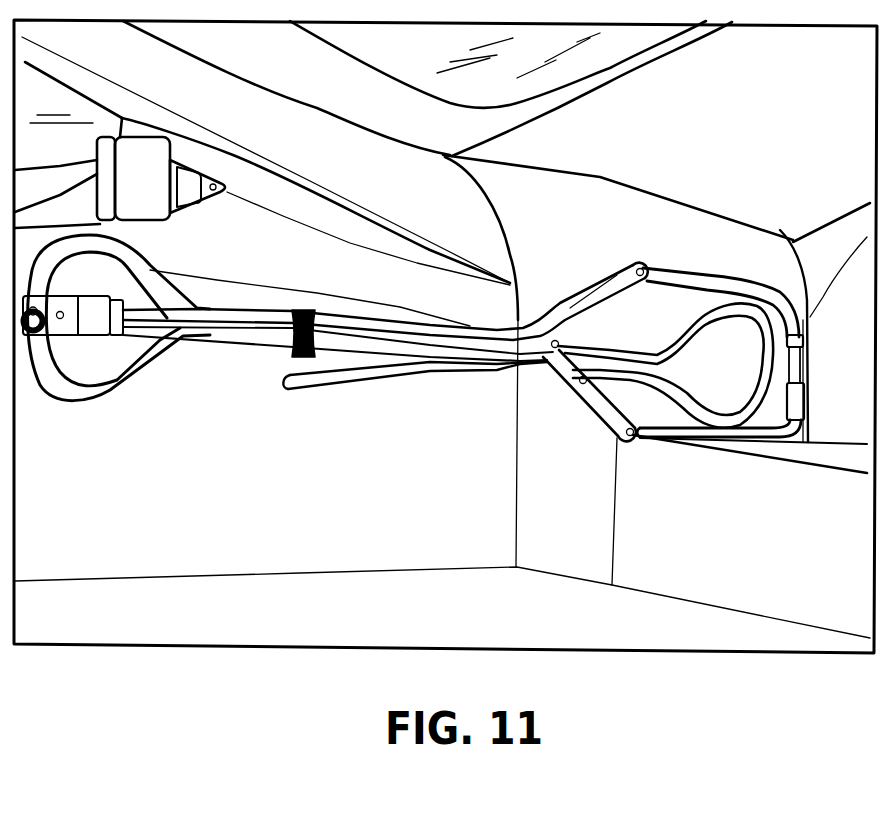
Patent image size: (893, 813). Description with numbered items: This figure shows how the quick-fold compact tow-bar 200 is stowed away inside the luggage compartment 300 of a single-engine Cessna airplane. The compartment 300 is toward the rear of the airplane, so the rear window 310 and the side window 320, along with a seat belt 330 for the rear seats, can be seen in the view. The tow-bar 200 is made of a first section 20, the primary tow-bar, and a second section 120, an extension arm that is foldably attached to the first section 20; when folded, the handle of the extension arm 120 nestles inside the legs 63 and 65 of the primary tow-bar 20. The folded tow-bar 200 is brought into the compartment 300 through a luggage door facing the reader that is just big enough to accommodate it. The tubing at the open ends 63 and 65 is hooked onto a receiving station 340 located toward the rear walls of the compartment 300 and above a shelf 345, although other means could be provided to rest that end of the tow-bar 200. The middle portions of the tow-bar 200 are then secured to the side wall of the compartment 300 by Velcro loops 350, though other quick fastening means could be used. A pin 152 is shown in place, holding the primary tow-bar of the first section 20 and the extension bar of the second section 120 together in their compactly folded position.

The first section 20 is at (412, 338).
The leg 63 is at (800, 325).
The leg 65 is at (800, 403).
The second section 120 is at (618, 343).
The pin 152 is at (43, 330).
The quick-fold compact tow-bar 200 is at (543, 262).
The luggage compartment 300 is at (335, 511).
The rear window 310 is at (613, 48).
The side window 320 is at (87, 110).
The seat belt 330 is at (157, 147).
The receiving station 340 is at (810, 355).
The shelf 345 is at (632, 473).
The Velcro loops 350 is at (313, 312).